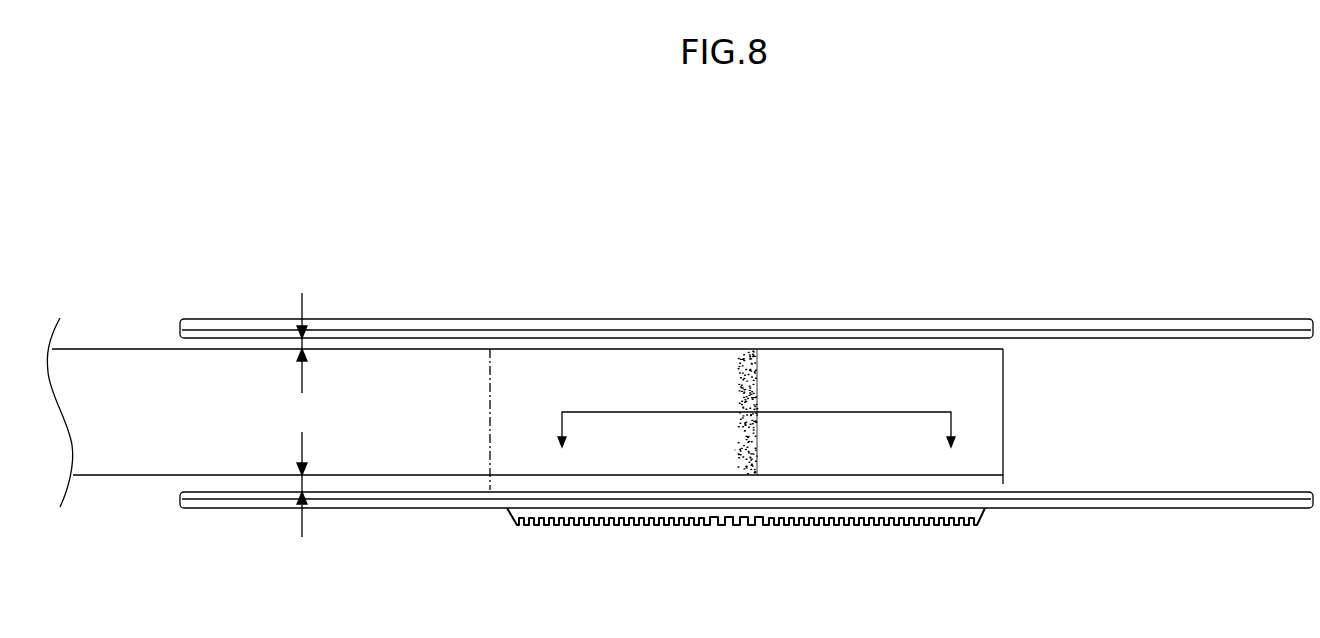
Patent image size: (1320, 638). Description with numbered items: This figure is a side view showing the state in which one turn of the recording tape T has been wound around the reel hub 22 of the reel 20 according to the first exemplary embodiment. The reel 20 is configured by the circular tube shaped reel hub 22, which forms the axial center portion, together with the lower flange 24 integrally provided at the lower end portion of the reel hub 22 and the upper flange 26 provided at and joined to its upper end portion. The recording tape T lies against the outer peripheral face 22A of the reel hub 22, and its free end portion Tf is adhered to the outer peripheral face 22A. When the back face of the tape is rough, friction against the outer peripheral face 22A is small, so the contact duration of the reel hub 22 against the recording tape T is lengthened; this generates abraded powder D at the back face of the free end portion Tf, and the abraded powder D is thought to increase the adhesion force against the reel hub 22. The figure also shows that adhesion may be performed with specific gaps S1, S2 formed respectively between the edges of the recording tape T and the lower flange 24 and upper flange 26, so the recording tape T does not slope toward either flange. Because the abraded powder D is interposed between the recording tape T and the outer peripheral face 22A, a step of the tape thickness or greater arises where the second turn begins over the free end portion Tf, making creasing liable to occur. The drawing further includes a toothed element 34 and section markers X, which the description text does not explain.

The reel 20 is at (970, 254).
The reel hub 22 is at (500, 343).
The outer peripheral face 22A is at (1005, 484).
The lower flange 24 is at (1168, 508).
The upper flange 26 is at (1167, 319).
The heater with teeth 34 is at (922, 527).
The recording tape T is at (125, 462).
The gap S1 is at (295, 343).
The gap S2 is at (295, 482).
The abraded powder D is at (744, 348).
The free end portion Tf is at (733, 452).
The cross-section line X is at (757, 444).